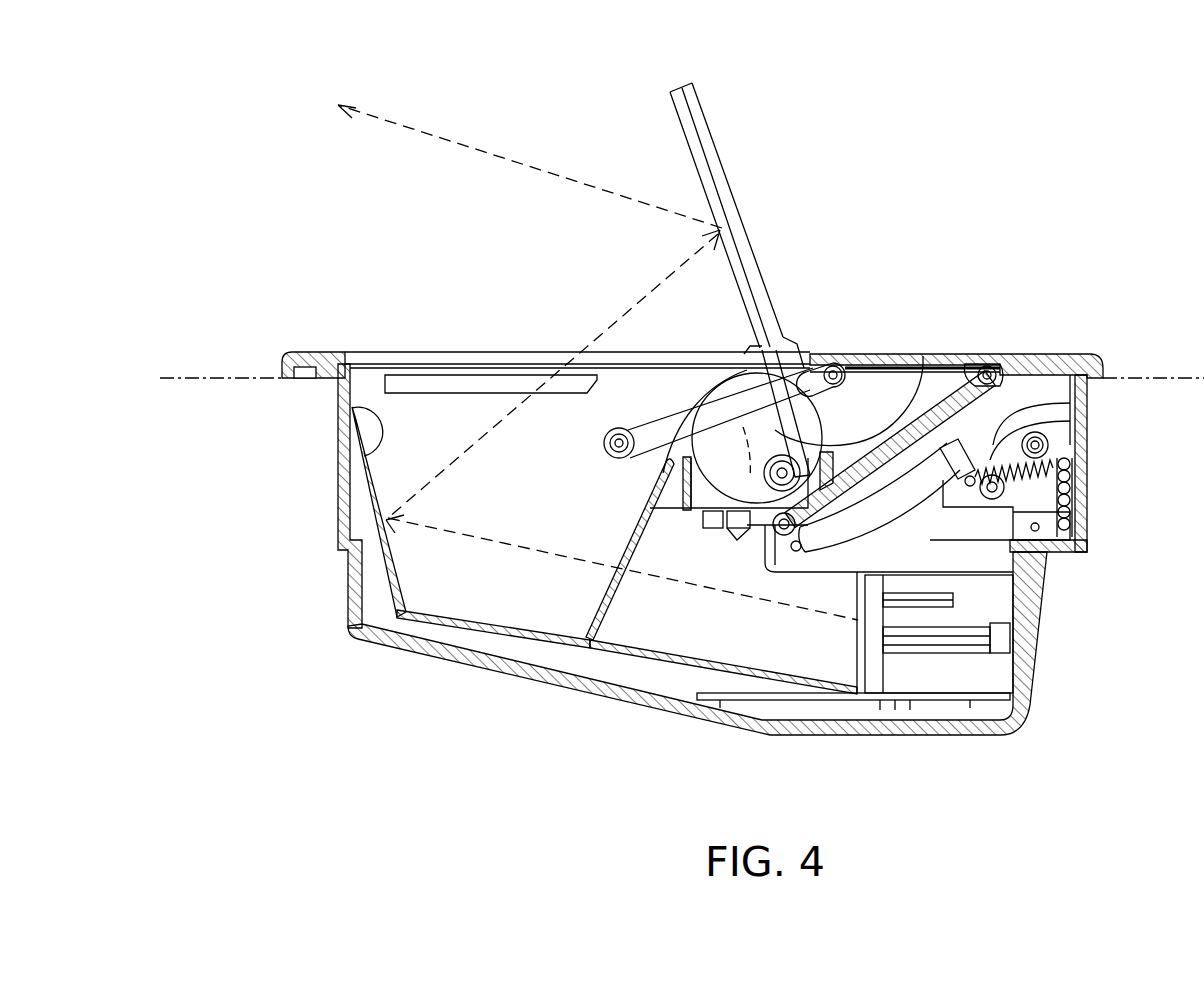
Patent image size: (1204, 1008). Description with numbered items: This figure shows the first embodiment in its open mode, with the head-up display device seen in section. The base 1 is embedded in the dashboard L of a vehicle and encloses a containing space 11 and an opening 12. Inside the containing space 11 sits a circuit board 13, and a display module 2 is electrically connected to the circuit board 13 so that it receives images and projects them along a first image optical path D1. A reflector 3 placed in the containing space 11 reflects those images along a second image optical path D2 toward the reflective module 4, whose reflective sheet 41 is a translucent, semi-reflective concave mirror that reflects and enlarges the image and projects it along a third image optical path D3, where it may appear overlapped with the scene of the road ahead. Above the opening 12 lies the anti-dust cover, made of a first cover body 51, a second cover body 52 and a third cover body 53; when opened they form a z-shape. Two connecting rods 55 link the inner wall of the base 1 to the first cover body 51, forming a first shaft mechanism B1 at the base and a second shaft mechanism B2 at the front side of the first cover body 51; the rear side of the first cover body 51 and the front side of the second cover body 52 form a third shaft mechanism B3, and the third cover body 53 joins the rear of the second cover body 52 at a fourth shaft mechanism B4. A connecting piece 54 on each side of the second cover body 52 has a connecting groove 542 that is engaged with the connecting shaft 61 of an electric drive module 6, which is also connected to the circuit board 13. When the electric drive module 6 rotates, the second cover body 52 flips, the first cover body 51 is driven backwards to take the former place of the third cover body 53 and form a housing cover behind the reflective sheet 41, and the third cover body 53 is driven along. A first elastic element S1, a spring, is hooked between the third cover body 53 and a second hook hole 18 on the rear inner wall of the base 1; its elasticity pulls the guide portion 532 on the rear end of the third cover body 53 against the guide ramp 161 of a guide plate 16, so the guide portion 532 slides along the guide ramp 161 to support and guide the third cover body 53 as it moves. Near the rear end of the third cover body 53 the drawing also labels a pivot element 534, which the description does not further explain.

The base 1 is at (355, 642).
The display module 2 is at (993, 606).
The reflector 3 is at (350, 405).
The reflective module 4 is at (788, 330).
The electric drive module 6 is at (672, 510).
The containing space 11 is at (483, 580).
The opening 12 is at (430, 370).
The circuit board 13 is at (835, 698).
The guide plate 16 is at (1043, 483).
The second hook hole 18 is at (1068, 463).
The reflective sheet 41 is at (677, 142).
The first cover body 51 is at (898, 358).
The second cover body 52 is at (917, 392).
The third cover body 53 is at (1013, 392).
The connecting piece 54 is at (850, 392).
The connecting rod 55 is at (690, 413).
The connecting shaft 61 is at (760, 520).
The guide ramp 161 is at (1000, 405).
The guide portion 532 is at (1050, 432).
The pivot 534 is at (967, 473).
The connecting groove 542 is at (713, 517).
The first shaft mechanism B1 is at (622, 428).
The second shaft mechanism B2 is at (833, 366).
The third shaft mechanism B3 is at (992, 366).
The fourth shaft mechanism B4 is at (785, 535).
The first image optical path D1 is at (530, 550).
The second image optical path D2 is at (462, 452).
The third image optical path D3 is at (430, 130).
The dashboard L is at (227, 378).
The first elastic element S1 is at (1025, 497).